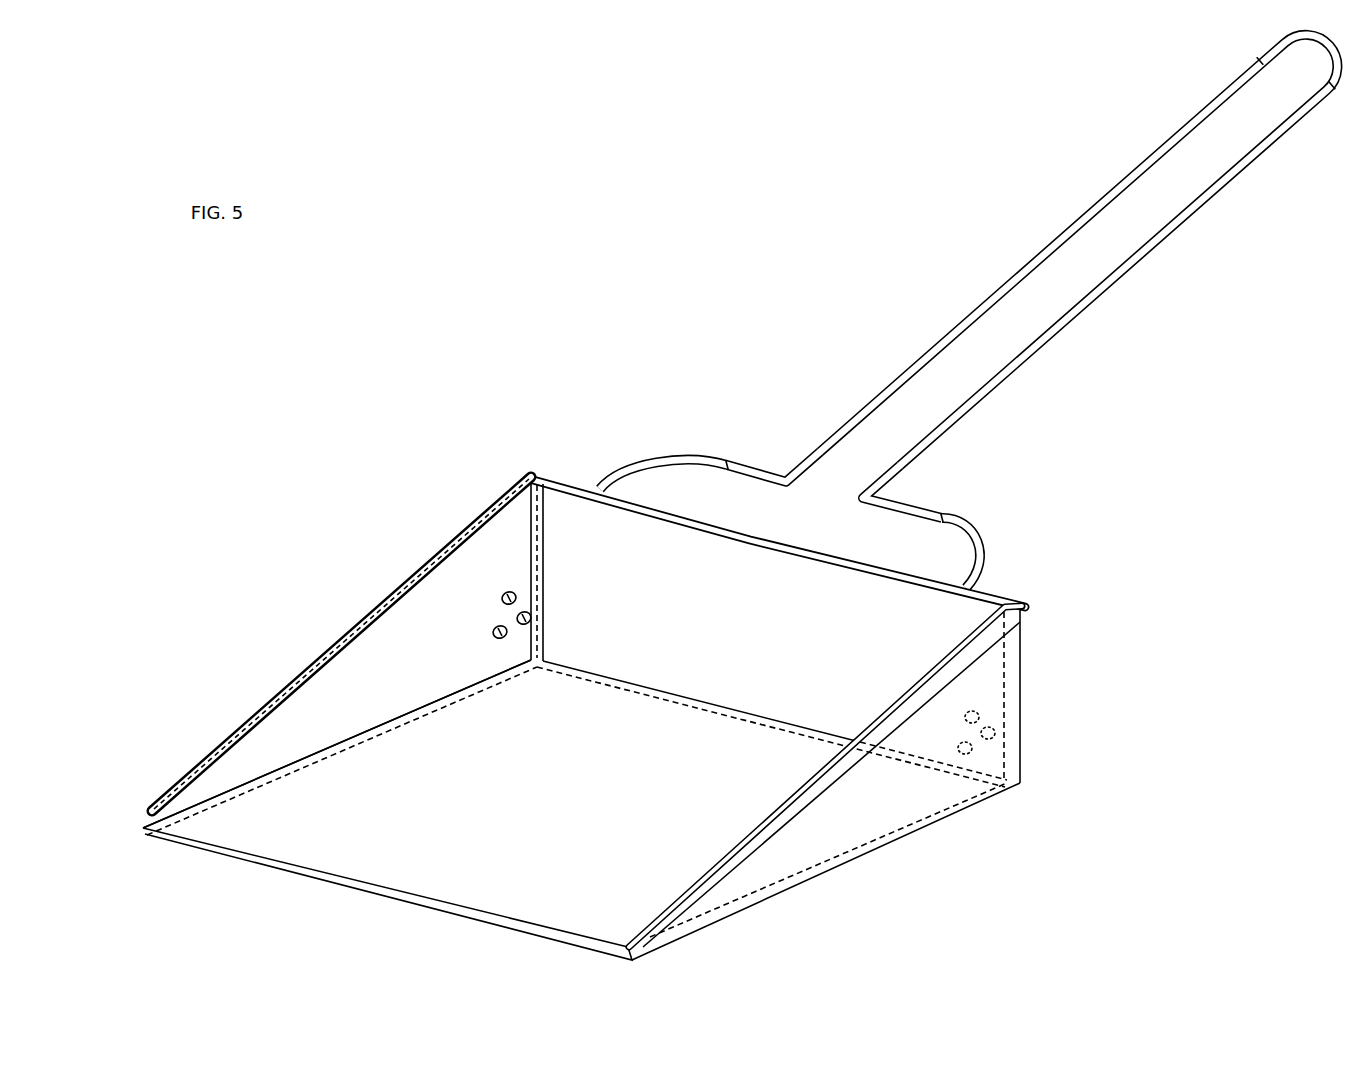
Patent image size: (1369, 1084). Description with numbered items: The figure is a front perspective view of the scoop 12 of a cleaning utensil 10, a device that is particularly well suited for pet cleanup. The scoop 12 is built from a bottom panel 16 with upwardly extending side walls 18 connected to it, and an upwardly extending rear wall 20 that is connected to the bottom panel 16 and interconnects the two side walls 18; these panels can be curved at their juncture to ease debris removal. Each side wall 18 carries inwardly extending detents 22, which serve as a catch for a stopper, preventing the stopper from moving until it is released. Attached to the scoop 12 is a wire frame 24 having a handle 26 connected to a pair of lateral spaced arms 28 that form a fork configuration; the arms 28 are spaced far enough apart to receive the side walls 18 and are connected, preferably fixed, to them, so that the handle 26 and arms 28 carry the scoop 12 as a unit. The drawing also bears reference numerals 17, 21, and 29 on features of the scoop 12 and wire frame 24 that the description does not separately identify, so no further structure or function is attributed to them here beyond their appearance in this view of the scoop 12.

The cleaning utensil 10 is at (574, 372).
The scoop 12 is at (527, 478).
The bottom panel 16 is at (329, 853).
The front edge lip 17 is at (386, 895).
The side walls 18 is at (367, 698).
The rear wall 20 is at (686, 565).
The fasteners 21 is at (530, 650).
The detents 22 is at (997, 743).
The wire frame 24 is at (788, 473).
The handle 26 is at (1025, 253).
The arms 28 is at (390, 598).
The handle curved portion 29 is at (966, 522).